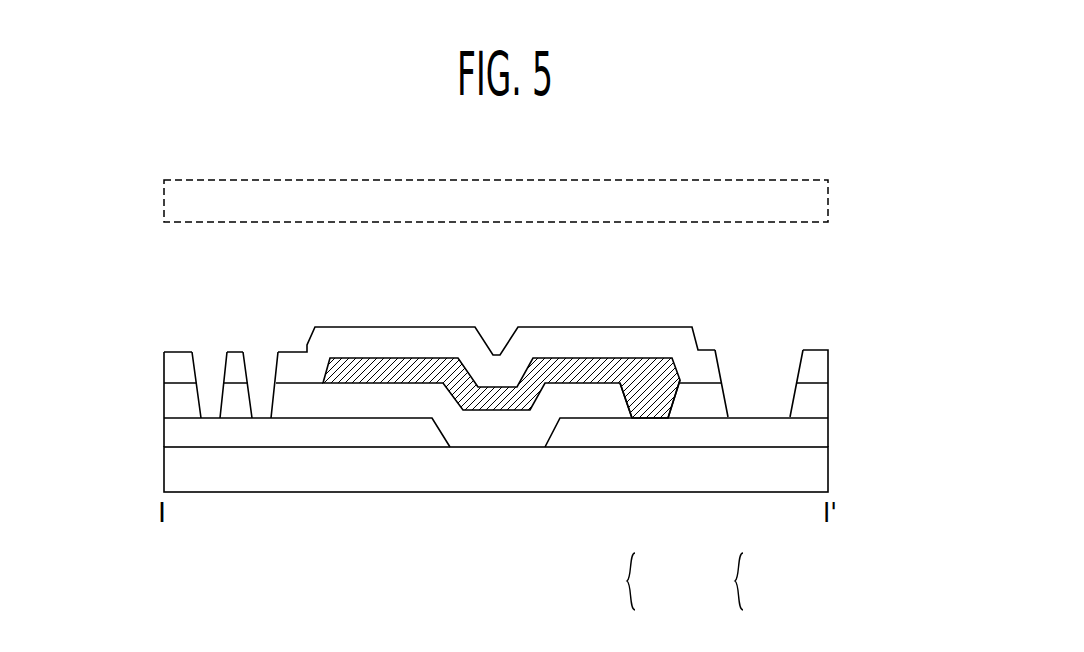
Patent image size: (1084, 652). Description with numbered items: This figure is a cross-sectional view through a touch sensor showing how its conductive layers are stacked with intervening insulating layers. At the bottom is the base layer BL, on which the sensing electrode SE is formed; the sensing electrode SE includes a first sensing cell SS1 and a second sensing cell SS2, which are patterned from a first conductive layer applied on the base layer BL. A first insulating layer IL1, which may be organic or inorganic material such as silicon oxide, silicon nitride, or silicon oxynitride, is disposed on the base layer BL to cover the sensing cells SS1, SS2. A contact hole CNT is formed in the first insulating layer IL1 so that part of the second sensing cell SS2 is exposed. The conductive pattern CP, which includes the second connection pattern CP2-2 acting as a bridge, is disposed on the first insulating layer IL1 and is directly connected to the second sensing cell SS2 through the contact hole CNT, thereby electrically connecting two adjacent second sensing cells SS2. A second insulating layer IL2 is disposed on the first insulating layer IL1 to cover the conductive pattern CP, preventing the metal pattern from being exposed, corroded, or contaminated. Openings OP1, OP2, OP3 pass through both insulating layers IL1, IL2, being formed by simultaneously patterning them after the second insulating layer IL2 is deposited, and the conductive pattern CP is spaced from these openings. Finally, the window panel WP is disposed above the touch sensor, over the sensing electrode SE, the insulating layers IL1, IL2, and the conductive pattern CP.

The window panel WP is at (826, 203).
The base layer BL is at (825, 470).
The first sensing cell SS1 is at (170, 431).
The second sensing cell SS2 is at (823, 433).
The sensing electrode SE is at (636, 583).
The first insulating layer IL1 is at (170, 401).
The second insulating layer IL2 is at (170, 366).
The first opening OP1 is at (211, 347).
The second opening OP2 is at (265, 347).
The third opening OP3 is at (759, 350).
The conductive pattern CP is at (392, 369).
The second connection pattern CP2-2 is at (757, 583).
The contact hole CNT is at (608, 378).